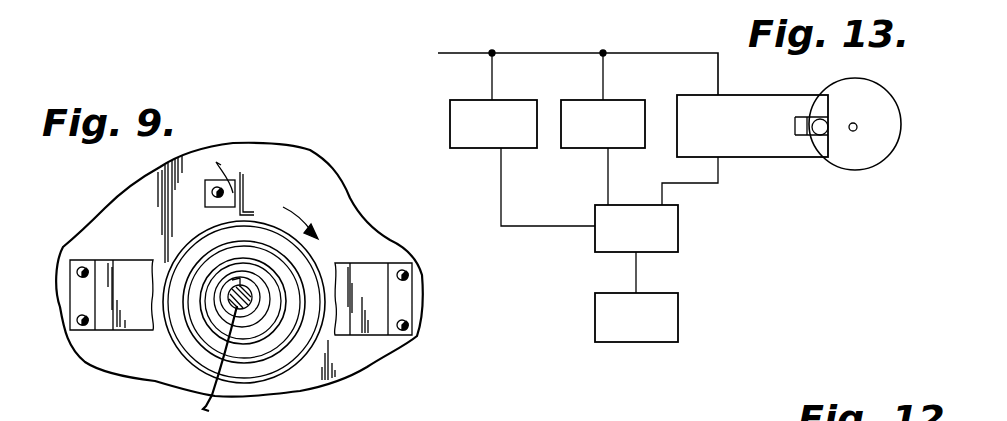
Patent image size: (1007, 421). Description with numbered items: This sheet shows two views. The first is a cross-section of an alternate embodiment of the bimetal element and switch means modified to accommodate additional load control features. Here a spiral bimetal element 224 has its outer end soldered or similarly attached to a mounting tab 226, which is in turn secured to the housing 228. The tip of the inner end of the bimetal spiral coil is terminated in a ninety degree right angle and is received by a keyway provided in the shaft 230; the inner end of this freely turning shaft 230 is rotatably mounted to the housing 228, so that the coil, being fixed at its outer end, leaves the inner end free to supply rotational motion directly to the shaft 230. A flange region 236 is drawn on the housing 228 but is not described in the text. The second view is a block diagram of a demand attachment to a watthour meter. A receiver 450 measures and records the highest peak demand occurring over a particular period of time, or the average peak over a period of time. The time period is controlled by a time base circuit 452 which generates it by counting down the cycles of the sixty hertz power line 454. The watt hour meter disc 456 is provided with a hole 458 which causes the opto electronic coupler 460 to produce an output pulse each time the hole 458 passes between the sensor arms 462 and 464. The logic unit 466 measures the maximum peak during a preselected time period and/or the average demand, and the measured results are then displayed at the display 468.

In FIG. 9, the bimetal element 224 is at (313, 250).
In FIG. 9, the mounting tab 226 is at (215, 205).
In FIG. 9, the housing 228 is at (88, 229).
In FIG. 9, the shaft 230 is at (236, 300).
In FIG. 9, the mounting flange 236 is at (403, 297).
In FIG. 13, the receiver 450 is at (452, 103).
In FIG. 13, the time base circuit 452 is at (587, 100).
In FIG. 13, the power line 454 is at (536, 53).
In FIG. 13, the watt hour meter disc 456 is at (872, 160).
In FIG. 13, the hole 458 is at (828, 122).
In FIG. 13, the opto electronic coupler 460 is at (705, 93).
In FIG. 13, the sensor arm 462 is at (812, 145).
In FIG. 13, the sensor arm 464 is at (812, 82).
In FIG. 13, the logic unit 466 is at (602, 238).
In FIG. 13, the display 468 is at (598, 302).